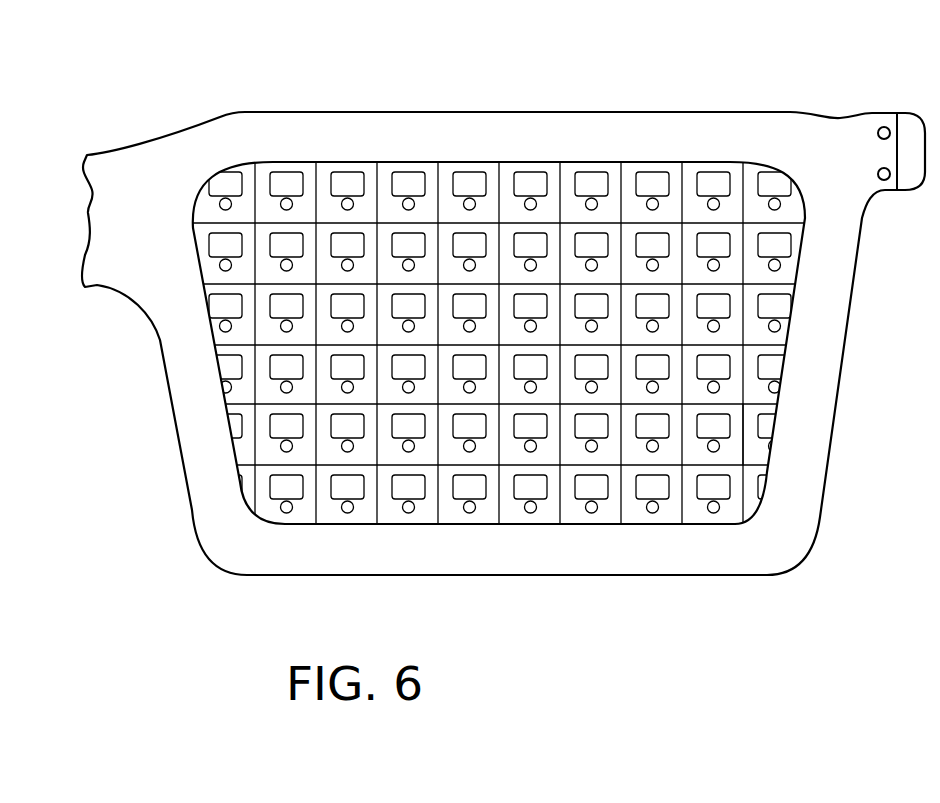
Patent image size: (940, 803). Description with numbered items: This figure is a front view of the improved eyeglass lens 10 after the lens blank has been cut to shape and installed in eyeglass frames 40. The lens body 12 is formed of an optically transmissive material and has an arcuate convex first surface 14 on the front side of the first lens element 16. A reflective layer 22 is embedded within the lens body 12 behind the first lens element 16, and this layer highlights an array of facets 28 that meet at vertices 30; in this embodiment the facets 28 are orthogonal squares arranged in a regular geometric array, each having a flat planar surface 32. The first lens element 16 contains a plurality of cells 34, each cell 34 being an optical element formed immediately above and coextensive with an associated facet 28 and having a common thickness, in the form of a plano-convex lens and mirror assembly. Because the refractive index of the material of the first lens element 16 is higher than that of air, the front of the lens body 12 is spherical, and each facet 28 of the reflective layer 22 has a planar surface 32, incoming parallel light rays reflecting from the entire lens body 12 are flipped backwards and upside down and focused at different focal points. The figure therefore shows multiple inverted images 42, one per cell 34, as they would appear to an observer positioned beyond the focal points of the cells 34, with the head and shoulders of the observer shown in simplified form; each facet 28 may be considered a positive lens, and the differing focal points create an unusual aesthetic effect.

The eyeglass lens 10 is at (503, 348).
The lens body 12 is at (546, 353).
The first surface 14 is at (753, 452).
The first lens element 16 is at (730, 512).
The reflective layer 22 is at (672, 518).
The facets 28 is at (635, 513).
The vertices 30 is at (683, 467).
The flat/planar surface 32 is at (575, 510).
The cells 34 is at (758, 330).
The eyeglass frames 40 is at (458, 135).
The inverted images 42 is at (780, 310).